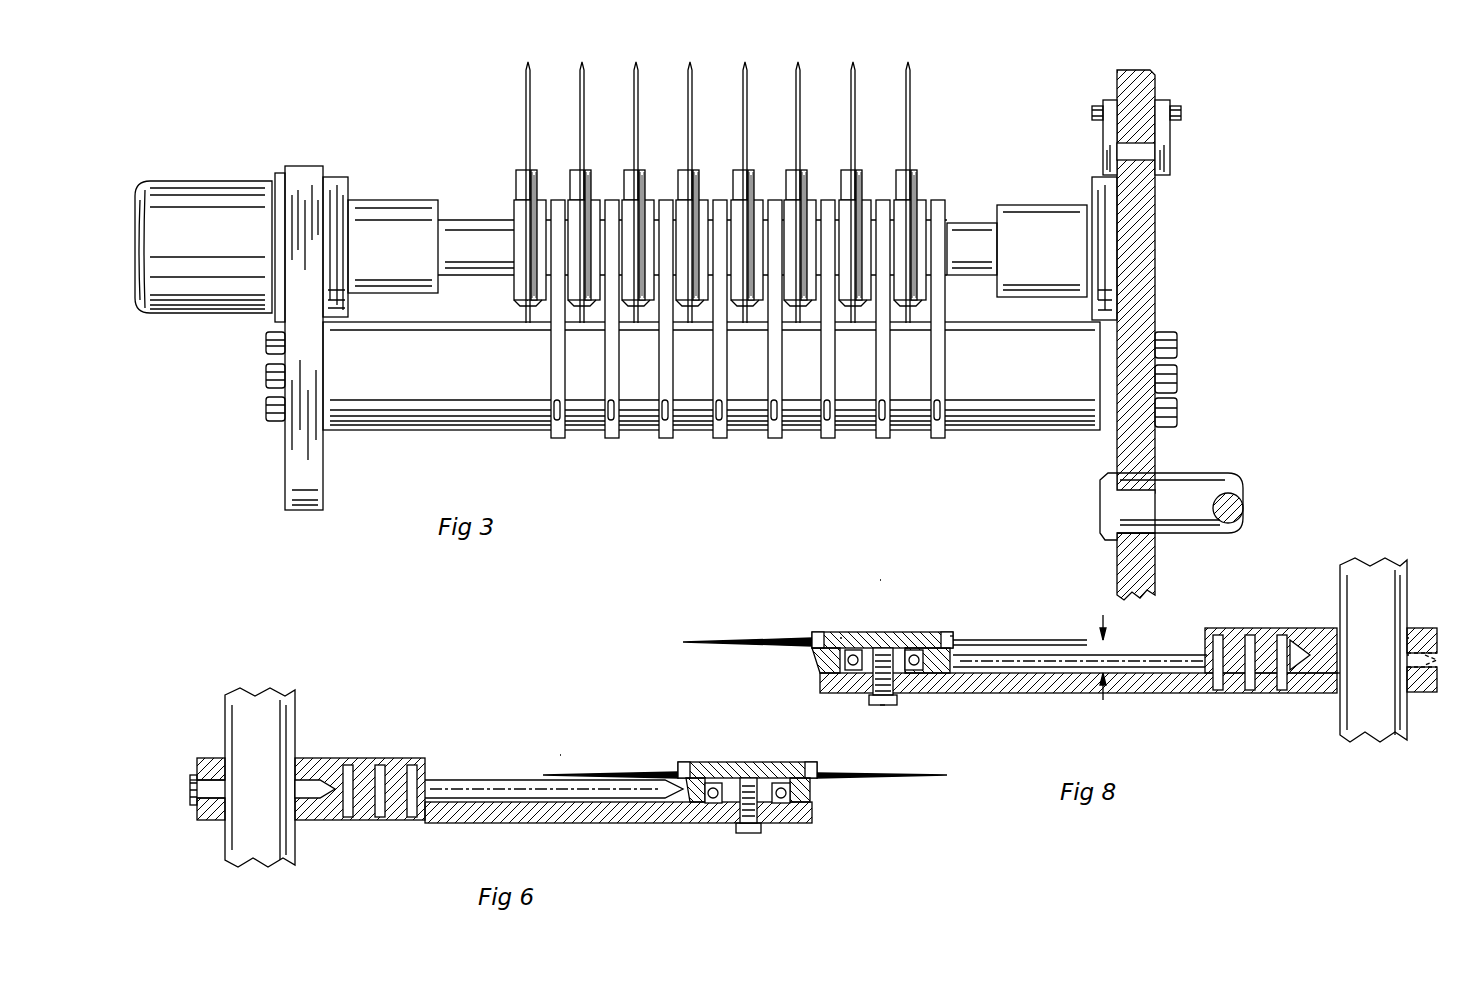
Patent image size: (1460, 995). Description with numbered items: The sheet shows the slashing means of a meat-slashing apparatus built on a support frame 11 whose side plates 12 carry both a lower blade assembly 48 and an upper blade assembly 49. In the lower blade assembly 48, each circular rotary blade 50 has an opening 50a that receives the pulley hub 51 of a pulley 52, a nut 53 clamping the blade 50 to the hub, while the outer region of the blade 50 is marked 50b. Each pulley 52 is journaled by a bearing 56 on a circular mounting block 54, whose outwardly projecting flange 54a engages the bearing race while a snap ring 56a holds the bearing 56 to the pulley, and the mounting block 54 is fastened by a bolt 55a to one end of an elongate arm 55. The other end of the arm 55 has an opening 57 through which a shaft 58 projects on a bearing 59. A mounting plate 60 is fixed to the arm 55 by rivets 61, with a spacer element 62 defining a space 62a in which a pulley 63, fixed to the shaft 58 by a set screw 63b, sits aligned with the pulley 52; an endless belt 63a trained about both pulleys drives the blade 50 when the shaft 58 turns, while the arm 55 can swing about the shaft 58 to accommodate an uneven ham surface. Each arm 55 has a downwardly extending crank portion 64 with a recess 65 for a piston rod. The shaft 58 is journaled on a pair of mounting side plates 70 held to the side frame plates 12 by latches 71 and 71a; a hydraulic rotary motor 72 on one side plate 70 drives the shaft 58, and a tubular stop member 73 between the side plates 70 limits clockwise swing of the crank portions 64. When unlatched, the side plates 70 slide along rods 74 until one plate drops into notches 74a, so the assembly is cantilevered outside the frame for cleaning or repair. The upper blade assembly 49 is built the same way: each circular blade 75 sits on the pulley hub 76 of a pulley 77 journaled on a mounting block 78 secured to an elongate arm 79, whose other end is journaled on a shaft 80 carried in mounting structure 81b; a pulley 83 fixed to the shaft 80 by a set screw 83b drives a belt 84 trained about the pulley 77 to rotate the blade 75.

In FIG. 3, the support frame 11 is at (1110, 78).
In FIG. 3, the side plates 12 is at (1150, 80).
In FIG. 8, the side plates 12 is at (985, 616).
In FIG. 3, the lower blade assembly 48 is at (415, 100).
In FIG. 8, the lower blade assembly 48 is at (888, 575).
In FIG. 6, the upper blade assembly 49 is at (562, 752).
In FIG. 3, the circular rotary blade 50 is at (910, 78).
In FIG. 8, the circular rotary blade 50 is at (705, 648).
In FIG. 8, the opening 50a is at (842, 632).
In FIG. 8, the blade cutting edge 50b is at (822, 642).
In FIG. 8, the pulley hub 51 is at (878, 620).
In FIG. 3, the pulley 52 is at (570, 188).
In FIG. 8, the pulley 52 is at (818, 672).
In FIG. 8, the nut 53 is at (940, 638).
In FIG. 8, the circular mounting block 54 is at (895, 695).
In FIG. 8, the flange 54a is at (908, 648).
In FIG. 3, the elongate arm 55 is at (610, 362).
In FIG. 8, the elongate arm 55 is at (1050, 695).
In FIG. 8, the bolt 55a is at (883, 708).
In FIG. 8, the bearing 56 is at (935, 660).
In FIG. 8, the snap ring 56a is at (848, 672).
In FIG. 8, the opening 57 is at (1410, 640).
In FIG. 3, the shaft 58 is at (972, 228).
In FIG. 8, the shaft 58 is at (1375, 728).
In FIG. 8, the bearing 59 is at (1330, 695).
In FIG. 3, the mounting plate 60 is at (565, 302).
In FIG. 8, the mounting plate 60 is at (1310, 628).
In FIG. 8, the rivets 61 is at (1250, 700).
In FIG. 8, the spacer element 62 is at (1205, 658).
In FIG. 8, the space 62a is at (1103, 700).
In FIG. 3, the pulley 63 is at (660, 420).
In FIG. 8, the pulley 63 is at (1440, 690).
In FIG. 3, the endless belt 63a is at (586, 190).
In FIG. 8, the endless belt 63a is at (1130, 652).
In FIG. 8, the set screw 63b is at (1420, 655).
In FIG. 3, the crank portion 64 is at (595, 440).
In FIG. 3, the recess 65 is at (552, 410).
In FIG. 3, the mounting side plates 70 is at (285, 480).
In FIG. 3, the latch 71 is at (1100, 133).
In FIG. 3, the latch 71a is at (1172, 144).
In FIG. 3, the hydraulic rotary motor 72 is at (188, 185).
In FIG. 3, the tubular stop member 73 is at (438, 430).
In FIG. 3, the rods 74 is at (1210, 535).
In FIG. 3, the notches 74a is at (1130, 490).
In FIG. 6, the circular blade 75 is at (908, 778).
In FIG. 6, the pulley hub 76 is at (755, 765).
In FIG. 6, the pulley 77 is at (812, 785).
In FIG. 6, the mounting block 78 is at (742, 760).
In FIG. 6, the elongate arm 79 is at (560, 823).
In FIG. 6, the shaft 80 is at (260, 855).
In FIG. 6, the hub 81b is at (228, 815).
In FIG. 6, the pulley 83 is at (190, 795).
In FIG. 6, the set screw 83b is at (192, 788).
In FIG. 6, the belt 84 is at (475, 785).